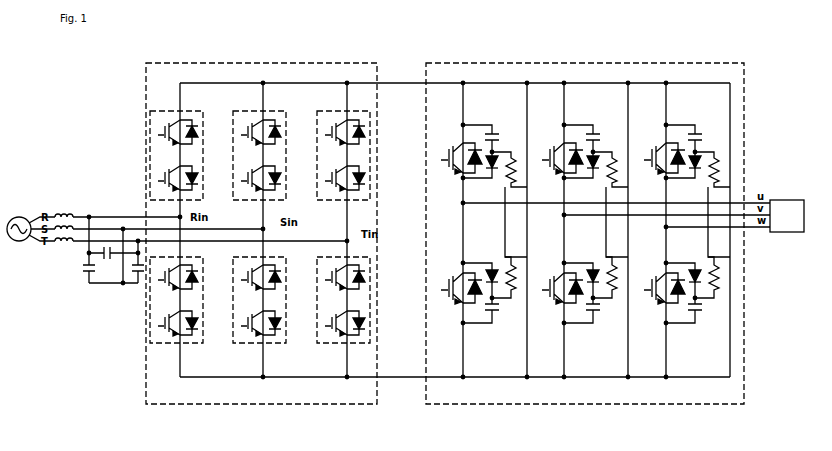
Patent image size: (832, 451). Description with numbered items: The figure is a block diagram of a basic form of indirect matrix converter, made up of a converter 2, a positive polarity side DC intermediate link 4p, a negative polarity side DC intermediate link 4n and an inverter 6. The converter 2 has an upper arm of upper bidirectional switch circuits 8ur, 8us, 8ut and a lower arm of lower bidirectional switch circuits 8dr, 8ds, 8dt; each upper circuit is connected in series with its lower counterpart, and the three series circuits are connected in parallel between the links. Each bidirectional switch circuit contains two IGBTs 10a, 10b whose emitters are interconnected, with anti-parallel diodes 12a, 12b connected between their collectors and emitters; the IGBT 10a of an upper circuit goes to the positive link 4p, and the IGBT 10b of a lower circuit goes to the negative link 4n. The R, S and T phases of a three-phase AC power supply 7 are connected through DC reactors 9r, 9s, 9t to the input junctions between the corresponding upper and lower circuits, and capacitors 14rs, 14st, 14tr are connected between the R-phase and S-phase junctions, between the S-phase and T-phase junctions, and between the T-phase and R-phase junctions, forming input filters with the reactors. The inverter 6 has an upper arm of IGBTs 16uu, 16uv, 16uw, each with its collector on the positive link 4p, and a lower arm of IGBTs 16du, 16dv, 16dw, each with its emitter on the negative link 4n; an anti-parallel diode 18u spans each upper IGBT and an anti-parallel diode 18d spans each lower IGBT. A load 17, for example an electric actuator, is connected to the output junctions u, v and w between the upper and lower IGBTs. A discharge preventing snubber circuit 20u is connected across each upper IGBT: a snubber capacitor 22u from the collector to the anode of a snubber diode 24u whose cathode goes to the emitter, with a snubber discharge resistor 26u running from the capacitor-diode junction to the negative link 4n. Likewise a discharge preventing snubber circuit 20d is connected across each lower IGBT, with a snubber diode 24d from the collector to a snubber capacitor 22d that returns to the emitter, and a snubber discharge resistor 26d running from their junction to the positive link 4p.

The converter 2 is at (205, 398).
The positive polarity side DC intermediate link 4p is at (408, 82).
The negative polarity side DC intermediate link 4n is at (392, 380).
The inverter 6 is at (480, 74).
The three-phase AC power supply 7 is at (17, 242).
The DC reactor 9r is at (64, 214).
The DC reactor 9s is at (72, 226).
The DC reactor 9t is at (62, 245).
The capacitor 14rs is at (86, 268).
The capacitor 14st is at (139, 260).
The capacitor 14tr is at (109, 260).
The upper bidirectional switch circuit 8ur is at (165, 112).
The upper bidirectional switch circuit 8us is at (250, 112).
The upper bidirectional switch circuit 8ut is at (328, 118).
The lower bidirectional switch circuit 8dr is at (167, 340).
The lower bidirectional switch circuit 8ds is at (284, 344).
The lower bidirectional switch circuit 8dt is at (338, 345).
The IGBT 10a is at (257, 205).
The IGBT 10b is at (228, 356).
The anti-parallel diode 12a is at (196, 130).
The anti-parallel diode 12b is at (197, 182).
The IGBT 16uu is at (445, 160).
The IGBT 16uv is at (548, 158).
The IGBT 16uw is at (650, 158).
The IGBT 16du is at (445, 290).
The IGBT 16dv is at (548, 292).
The IGBT 16dw is at (650, 292).
The anti-parallel diode 18u is at (458, 170).
The anti-parallel diode 18d is at (459, 325).
The discharge preventing snubber circuit 20u is at (491, 119).
The discharge preventing snubber circuit 20d is at (489, 259).
The snubber capacitor 22u is at (497, 135).
The snubber capacitor 22d is at (499, 312).
The snubber diode 24u is at (492, 172).
The snubber diode 24d is at (493, 270).
The snubber discharge resistor 26u is at (513, 160).
The snubber discharge resistor 26d is at (513, 292).
The load 17 is at (790, 234).